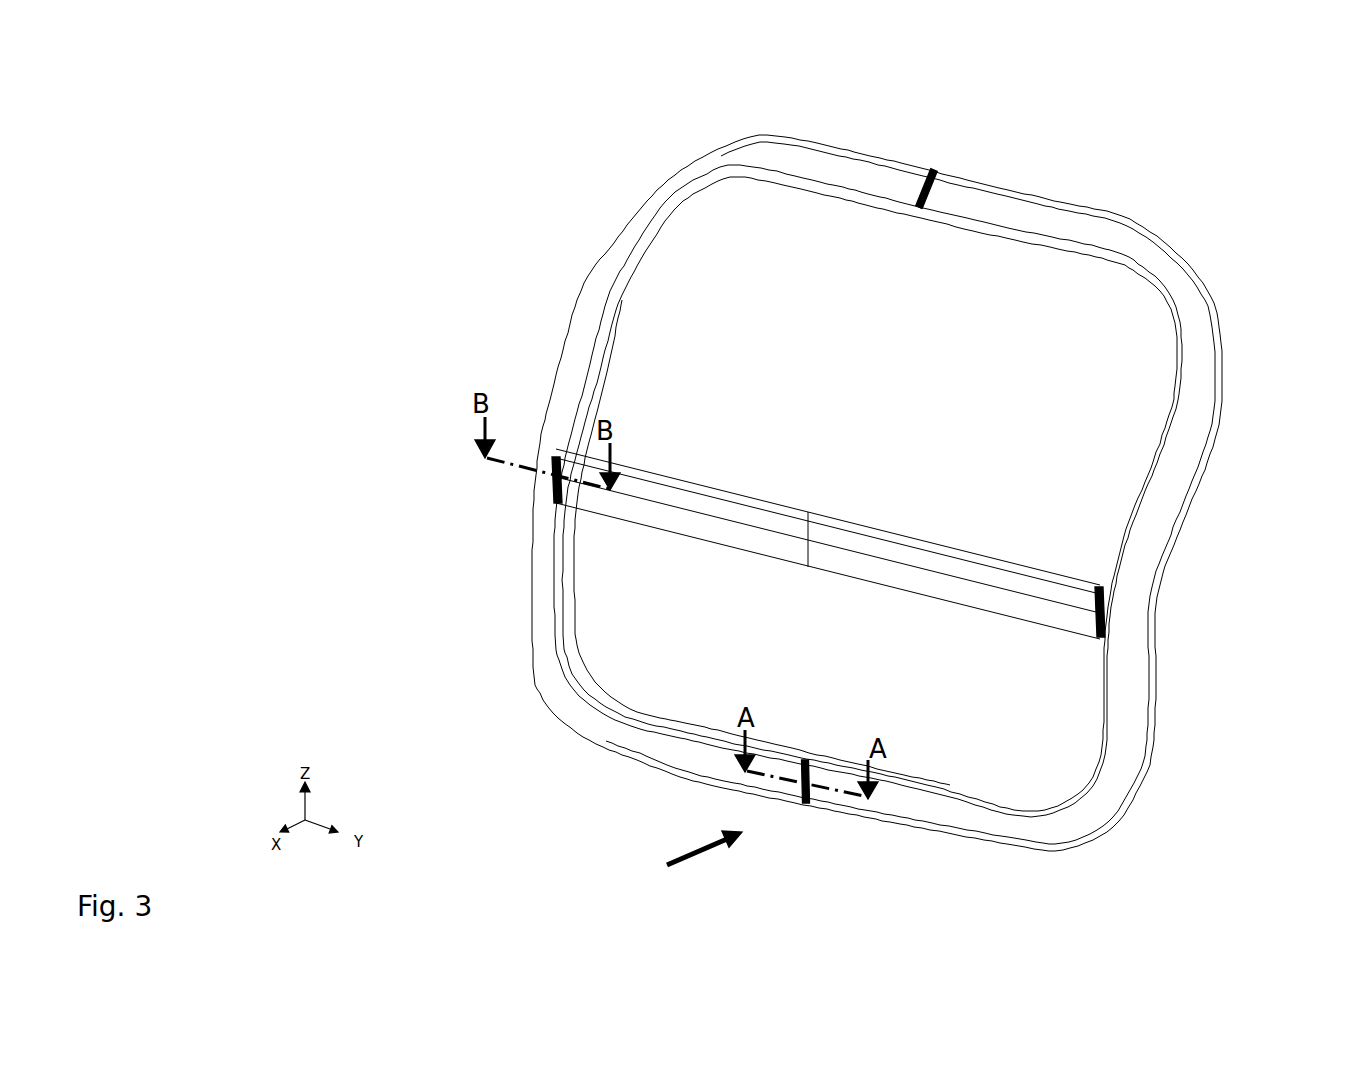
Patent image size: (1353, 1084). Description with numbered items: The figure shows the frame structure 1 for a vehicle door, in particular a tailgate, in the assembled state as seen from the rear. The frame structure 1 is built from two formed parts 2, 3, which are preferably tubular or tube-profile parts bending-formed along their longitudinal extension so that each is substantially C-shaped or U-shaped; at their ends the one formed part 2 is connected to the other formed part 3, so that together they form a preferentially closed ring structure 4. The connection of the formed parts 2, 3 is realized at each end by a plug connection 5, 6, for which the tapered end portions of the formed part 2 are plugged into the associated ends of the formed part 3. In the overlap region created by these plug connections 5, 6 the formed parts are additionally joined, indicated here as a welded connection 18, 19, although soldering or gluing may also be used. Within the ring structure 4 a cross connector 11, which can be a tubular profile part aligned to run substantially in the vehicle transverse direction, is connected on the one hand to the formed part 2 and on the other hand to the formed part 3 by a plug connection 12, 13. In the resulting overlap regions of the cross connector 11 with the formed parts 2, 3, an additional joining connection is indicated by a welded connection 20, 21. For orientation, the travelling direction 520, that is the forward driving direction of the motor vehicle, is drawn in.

The frame structure 1 is at (1225, 248).
The formed part 2 is at (590, 320).
The formed part 3 is at (1187, 418).
The ring structure 4 is at (1068, 487).
The plug connection 5 is at (933, 170).
The plug connection 6 is at (811, 770).
The cross connector 11 is at (708, 522).
The plug connection 12 is at (559, 462).
The plug connection 13 is at (1088, 620).
The welded connection 18 is at (920, 207).
The welded connection 19 is at (803, 783).
The welded connection 20 is at (553, 493).
The welded connection 21 is at (1097, 587).
The travelling direction 520 is at (700, 858).